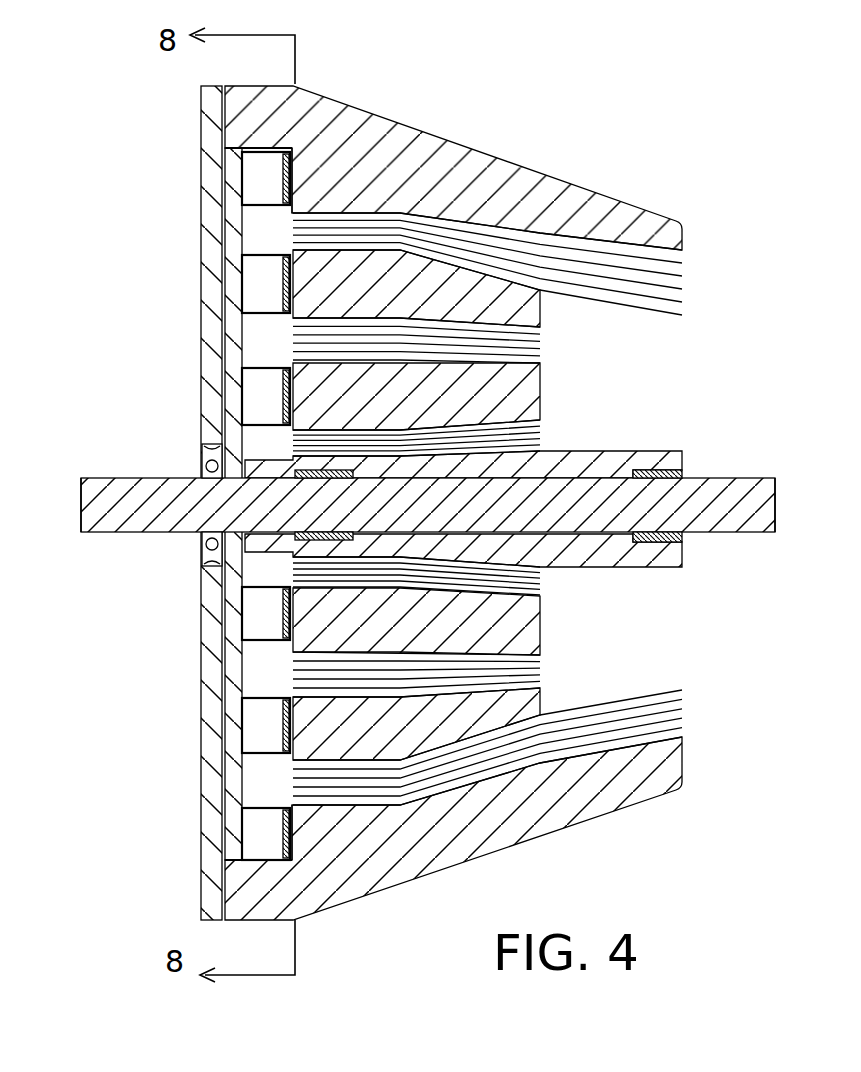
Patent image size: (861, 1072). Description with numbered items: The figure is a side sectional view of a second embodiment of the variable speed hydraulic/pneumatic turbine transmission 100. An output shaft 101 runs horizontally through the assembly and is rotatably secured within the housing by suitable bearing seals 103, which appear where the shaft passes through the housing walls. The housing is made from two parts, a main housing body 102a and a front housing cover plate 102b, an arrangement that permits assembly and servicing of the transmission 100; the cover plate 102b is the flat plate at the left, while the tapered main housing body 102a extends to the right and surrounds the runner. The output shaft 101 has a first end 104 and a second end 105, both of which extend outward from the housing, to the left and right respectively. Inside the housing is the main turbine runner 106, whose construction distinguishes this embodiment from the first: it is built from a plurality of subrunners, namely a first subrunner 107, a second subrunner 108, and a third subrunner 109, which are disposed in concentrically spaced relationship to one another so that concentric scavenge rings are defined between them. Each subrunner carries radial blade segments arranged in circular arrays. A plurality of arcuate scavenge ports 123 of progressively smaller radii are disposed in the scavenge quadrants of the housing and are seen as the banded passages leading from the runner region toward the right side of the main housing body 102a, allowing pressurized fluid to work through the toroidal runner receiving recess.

The variable speed hydraulic/pneumatic turbine transmission 100 is at (80, 256).
The output shaft 101 is at (740, 492).
The main housing body 102a is at (502, 158).
The front housing cover plate 102b is at (202, 152).
The bearing seals 103 is at (305, 488).
The first end 104 is at (46, 505).
The second end 105 is at (770, 514).
The main turbine runner 106 is at (250, 836).
The first subrunner 107 is at (250, 778).
The second subrunner 108 is at (255, 716).
The third subrunner 109 is at (252, 610).
The arcuate scavenge ports 123 is at (500, 263).